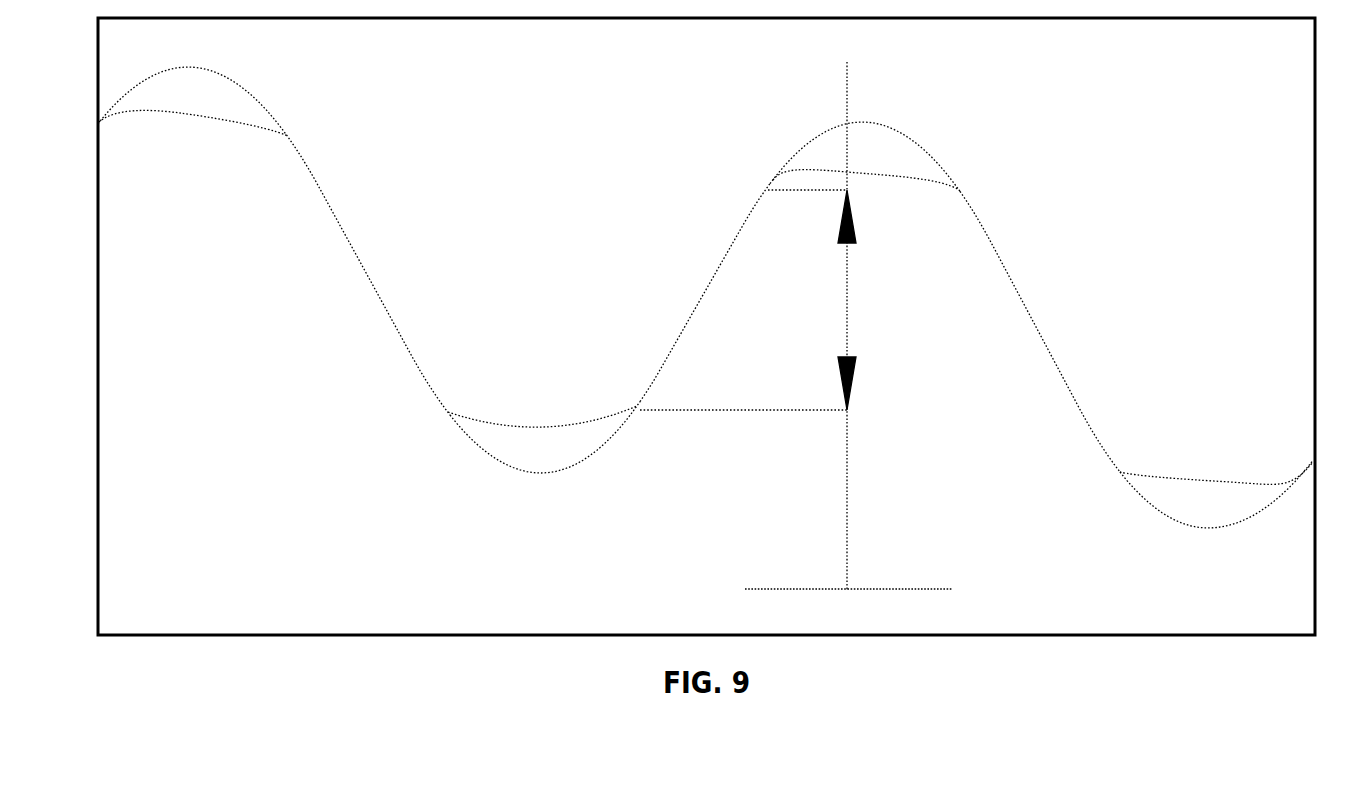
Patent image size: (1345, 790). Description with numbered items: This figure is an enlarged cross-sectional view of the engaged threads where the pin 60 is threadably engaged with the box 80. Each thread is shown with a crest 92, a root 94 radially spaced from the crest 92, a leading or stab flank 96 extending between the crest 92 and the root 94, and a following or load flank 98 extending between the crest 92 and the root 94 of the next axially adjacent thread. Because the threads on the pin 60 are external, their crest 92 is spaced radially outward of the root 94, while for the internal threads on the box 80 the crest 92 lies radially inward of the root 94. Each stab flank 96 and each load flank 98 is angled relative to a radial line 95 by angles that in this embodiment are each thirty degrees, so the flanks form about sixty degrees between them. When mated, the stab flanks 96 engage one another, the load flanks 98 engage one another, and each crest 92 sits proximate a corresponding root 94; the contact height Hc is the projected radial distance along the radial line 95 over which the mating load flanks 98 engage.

The crest 92 is at (173, 118).
The root 94 is at (218, 72).
The radial line 95 is at (848, 469).
The stab flank 96 is at (323, 195).
The load flank 98 is at (687, 328).
The pin 60 is at (240, 551).
The box 80 is at (1212, 118).